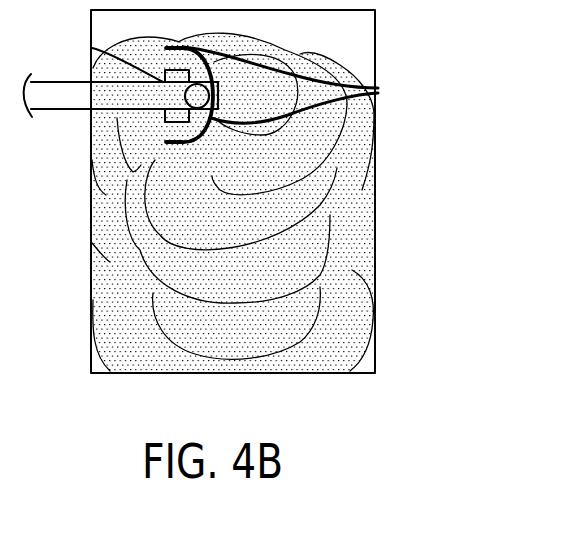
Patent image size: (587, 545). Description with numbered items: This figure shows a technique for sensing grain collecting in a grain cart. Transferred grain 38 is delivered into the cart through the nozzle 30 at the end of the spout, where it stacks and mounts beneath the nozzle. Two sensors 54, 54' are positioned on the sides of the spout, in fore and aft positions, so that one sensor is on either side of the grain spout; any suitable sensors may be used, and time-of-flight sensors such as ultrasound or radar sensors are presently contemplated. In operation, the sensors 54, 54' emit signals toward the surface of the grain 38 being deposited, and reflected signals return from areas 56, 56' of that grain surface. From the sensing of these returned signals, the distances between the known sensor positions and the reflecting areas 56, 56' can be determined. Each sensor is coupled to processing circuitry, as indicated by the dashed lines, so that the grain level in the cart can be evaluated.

The nozzle 30 is at (375, 173).
The transferred grain 38 is at (246, 285).
The sensor 54 is at (101, 142).
The sensor 54' is at (125, 85).
The area 56 is at (334, 76).
The area 56' is at (309, 107).